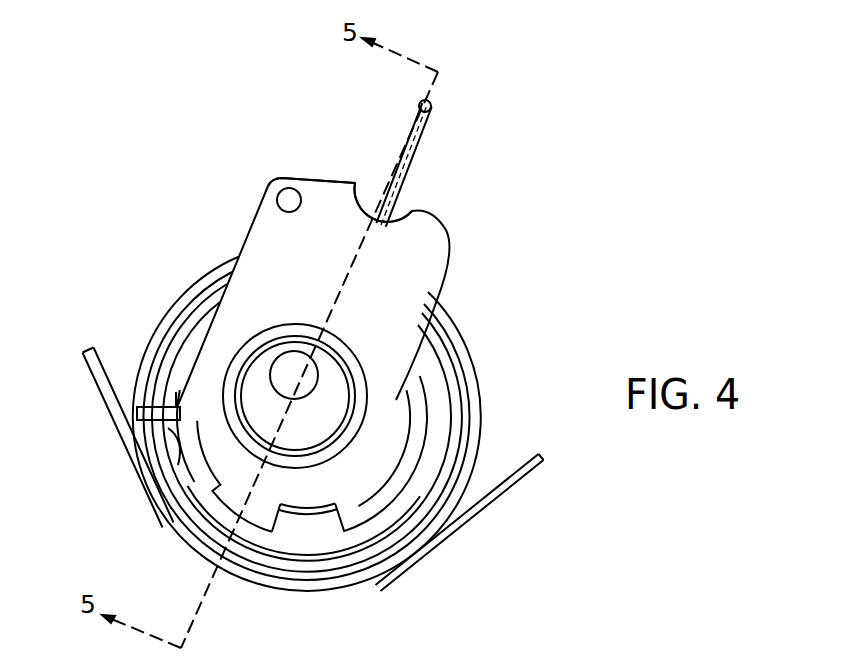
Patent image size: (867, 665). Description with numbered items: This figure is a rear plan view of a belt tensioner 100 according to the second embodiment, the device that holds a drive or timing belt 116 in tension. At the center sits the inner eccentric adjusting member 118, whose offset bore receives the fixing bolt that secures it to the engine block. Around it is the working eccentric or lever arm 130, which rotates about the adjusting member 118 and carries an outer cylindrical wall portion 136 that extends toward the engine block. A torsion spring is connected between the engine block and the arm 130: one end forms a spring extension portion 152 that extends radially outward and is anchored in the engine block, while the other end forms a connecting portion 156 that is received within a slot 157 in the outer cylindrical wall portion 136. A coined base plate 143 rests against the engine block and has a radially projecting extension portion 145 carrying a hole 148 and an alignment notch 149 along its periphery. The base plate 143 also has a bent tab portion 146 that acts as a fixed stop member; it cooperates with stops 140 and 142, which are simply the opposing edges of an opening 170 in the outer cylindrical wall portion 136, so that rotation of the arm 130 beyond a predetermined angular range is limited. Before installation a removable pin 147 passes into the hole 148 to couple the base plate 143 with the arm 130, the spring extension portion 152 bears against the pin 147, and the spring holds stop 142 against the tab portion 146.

The belt tensioner 100 is at (533, 284).
The drive or timing belt 116 is at (520, 466).
The inner eccentric adjusting member 118 is at (330, 410).
The working eccentric or lever arm 130 is at (402, 467).
The outer cylindrical wall portion 136 is at (393, 500).
The stop 140 is at (167, 477).
The stop 142 is at (340, 543).
The coined base plate 143 is at (217, 450).
The extension portion 145 is at (413, 243).
The bent tab portion 146 is at (265, 522).
The removable pin 147 is at (292, 211).
The hole 148 is at (282, 192).
The alignment notch 149 is at (398, 213).
The spring extension portion 152 is at (393, 158).
The connecting portion 156 is at (137, 411).
The slot 157 is at (167, 427).
The opening 170 is at (309, 530).